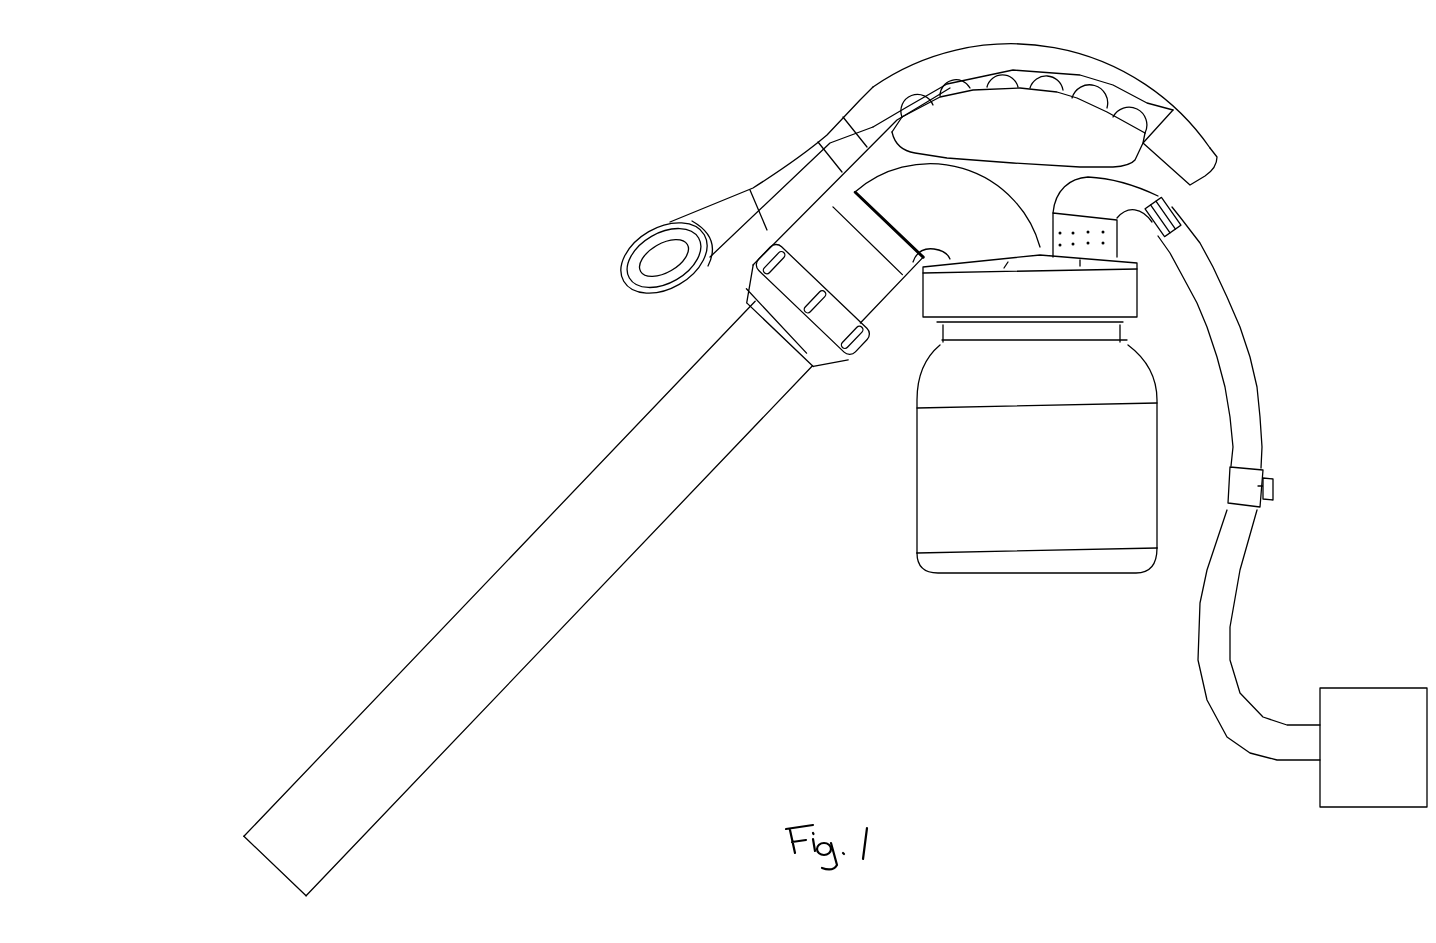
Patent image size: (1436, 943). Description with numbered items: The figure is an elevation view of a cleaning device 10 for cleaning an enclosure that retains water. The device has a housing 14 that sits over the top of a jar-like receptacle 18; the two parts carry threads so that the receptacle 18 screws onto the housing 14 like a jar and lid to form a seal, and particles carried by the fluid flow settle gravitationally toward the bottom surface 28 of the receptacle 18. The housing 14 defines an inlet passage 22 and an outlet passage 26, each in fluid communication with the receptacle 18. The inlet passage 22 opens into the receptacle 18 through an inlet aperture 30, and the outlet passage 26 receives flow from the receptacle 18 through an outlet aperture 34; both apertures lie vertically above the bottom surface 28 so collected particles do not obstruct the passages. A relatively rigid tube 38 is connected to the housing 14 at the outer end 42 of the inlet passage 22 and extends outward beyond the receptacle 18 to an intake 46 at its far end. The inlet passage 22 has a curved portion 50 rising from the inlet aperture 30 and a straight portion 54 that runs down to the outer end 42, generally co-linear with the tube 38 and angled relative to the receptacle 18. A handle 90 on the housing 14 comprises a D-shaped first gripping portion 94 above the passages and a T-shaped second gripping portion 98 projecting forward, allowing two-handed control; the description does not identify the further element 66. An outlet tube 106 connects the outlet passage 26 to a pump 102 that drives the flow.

The cleaning device 10 is at (490, 284).
The housing 14 is at (1099, 265).
The receptacle 18 is at (986, 471).
The inlet passage 22 is at (763, 176).
The outlet passage 26 is at (1188, 122).
The bottom surface 28 is at (1020, 574).
The inlet aperture 30 is at (1008, 270).
The outlet aperture 34 is at (1080, 263).
The tube 38 is at (530, 598).
The outer end 42 is at (720, 212).
The intake 46 is at (275, 865).
The curved portion 50 is at (1003, 185).
The straight portion 54 is at (855, 255).
The collar 66 is at (802, 311).
The handle 90 is at (1025, 111).
The first gripping portion 94 is at (1100, 64).
The second gripping portion 98 is at (626, 240).
The pump 102 is at (1368, 688).
The outlet tube 106 is at (1256, 390).